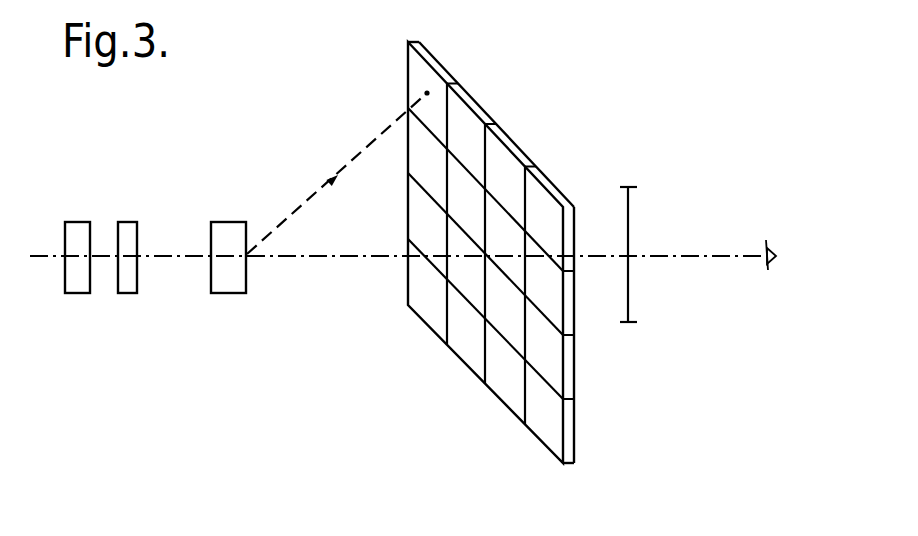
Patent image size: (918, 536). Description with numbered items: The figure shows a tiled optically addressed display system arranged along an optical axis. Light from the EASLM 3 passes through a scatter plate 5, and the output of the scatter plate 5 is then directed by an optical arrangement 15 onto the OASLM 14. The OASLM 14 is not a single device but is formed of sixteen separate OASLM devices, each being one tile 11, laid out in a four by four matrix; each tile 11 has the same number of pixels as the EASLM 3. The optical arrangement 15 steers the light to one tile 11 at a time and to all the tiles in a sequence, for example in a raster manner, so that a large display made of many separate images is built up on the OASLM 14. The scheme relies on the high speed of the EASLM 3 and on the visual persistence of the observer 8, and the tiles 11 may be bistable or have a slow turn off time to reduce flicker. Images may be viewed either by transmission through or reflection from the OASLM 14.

The EASLM 3 is at (75, 283).
The scatter plate 5 is at (127, 283).
The optical arrangement 15 is at (227, 283).
The OASLM 14 is at (398, 66).
The tile 11 is at (509, 388).
The observer 8 is at (769, 246).